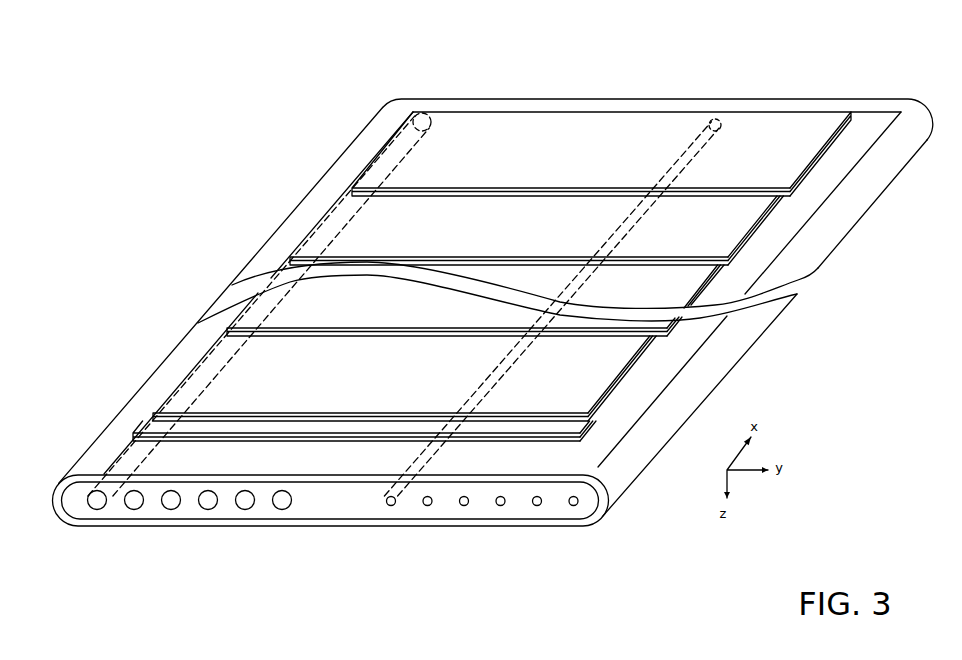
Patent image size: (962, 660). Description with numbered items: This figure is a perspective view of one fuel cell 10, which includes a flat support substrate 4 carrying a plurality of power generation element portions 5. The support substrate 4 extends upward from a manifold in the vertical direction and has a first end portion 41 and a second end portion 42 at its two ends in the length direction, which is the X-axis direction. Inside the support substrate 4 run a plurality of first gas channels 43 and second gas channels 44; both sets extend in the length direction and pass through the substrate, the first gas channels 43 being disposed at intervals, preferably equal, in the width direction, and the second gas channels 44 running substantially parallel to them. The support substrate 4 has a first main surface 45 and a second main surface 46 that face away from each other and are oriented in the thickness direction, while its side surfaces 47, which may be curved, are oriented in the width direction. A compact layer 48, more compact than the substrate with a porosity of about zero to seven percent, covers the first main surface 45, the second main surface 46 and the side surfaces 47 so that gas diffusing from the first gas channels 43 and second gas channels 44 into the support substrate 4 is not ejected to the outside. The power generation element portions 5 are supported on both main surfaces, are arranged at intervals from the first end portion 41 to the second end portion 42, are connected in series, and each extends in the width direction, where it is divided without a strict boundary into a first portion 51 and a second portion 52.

The fuel cell 10 is at (594, 85).
The support substrate 4 is at (317, 509).
The first end portion 41 is at (104, 473).
The second end portion 42 is at (441, 102).
The first gas channels 43 is at (96, 508).
The second gas channels 44 is at (388, 508).
The first main surface 45 is at (817, 191).
The second main surface 46 is at (786, 276).
The side surfaces 47 is at (757, 325).
The compact layer 48 is at (171, 527).
The power generation element portions 5 is at (413, 174).
The first portion 51 is at (453, 147).
The second portion 52 is at (685, 147).